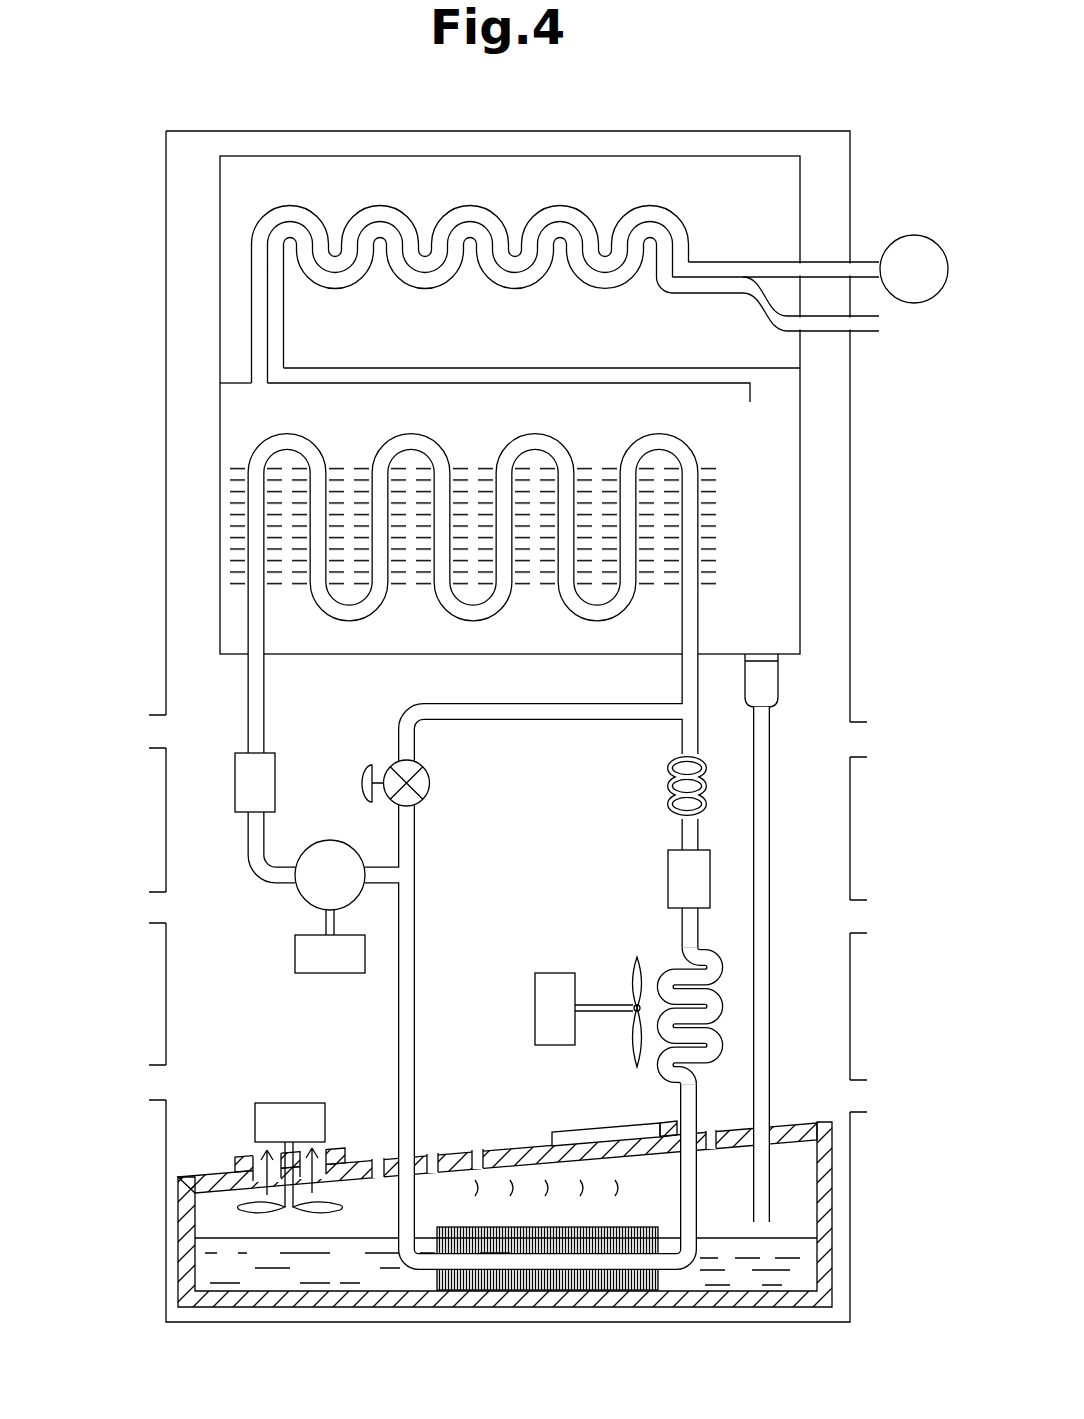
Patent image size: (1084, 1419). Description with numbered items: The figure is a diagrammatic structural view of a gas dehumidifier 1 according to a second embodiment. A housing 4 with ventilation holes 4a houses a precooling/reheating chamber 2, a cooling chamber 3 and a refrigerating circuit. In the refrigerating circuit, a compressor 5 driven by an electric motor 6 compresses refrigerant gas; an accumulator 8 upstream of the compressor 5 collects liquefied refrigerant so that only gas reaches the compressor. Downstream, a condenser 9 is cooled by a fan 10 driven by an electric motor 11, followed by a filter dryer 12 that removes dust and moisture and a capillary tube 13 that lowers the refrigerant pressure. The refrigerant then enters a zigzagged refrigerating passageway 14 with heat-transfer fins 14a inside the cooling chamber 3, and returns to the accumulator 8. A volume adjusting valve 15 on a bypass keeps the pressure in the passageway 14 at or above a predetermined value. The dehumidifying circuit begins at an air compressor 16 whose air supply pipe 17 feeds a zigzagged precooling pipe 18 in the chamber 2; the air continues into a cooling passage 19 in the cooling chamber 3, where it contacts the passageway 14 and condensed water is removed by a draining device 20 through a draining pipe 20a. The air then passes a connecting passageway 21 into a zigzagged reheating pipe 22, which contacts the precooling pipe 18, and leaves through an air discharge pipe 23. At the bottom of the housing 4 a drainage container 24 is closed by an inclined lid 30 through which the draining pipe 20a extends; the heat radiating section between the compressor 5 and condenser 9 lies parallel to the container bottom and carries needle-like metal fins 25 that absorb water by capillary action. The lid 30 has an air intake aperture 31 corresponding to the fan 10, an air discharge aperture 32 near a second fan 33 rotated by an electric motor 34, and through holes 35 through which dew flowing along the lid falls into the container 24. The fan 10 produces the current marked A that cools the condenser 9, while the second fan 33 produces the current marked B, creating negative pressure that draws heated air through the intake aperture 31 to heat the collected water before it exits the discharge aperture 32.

The gas dehumidifier 1 is at (731, 100).
The precooling/reheating chamber 2 is at (388, 157).
The cooling chamber 3 is at (800, 497).
The housing 4 is at (470, 131).
The ventilation holes 4a is at (150, 716).
The compressor 5 is at (331, 840).
The electric motor 6 is at (310, 974).
The accumulator 8 is at (277, 771).
The condenser 9 is at (660, 962).
The fan 10 is at (632, 958).
The electric motor 11 is at (535, 1008).
The filter dryer 12 is at (668, 875).
The capillary tube 13 is at (668, 779).
The refrigerating passageway 14 is at (571, 443).
The fins 14a is at (703, 468).
The volume adjusting valve 15 is at (431, 783).
The air compressor 16 is at (920, 236).
The air supply pipe 17 is at (868, 259).
The precooling pipe 18 is at (578, 207).
The cooling passage 19 is at (228, 413).
The draining device 20 is at (780, 685).
The draining pipe 20a is at (771, 848).
The connecting passageway 21 is at (540, 368).
The reheating pipe 22 is at (430, 289).
The air discharge pipe 23 is at (876, 333).
The drainage container 24 is at (834, 1256).
The fins 25 is at (640, 1232).
The lid 30 is at (795, 1121).
The air intake aperture 31 is at (568, 1135).
The air discharge aperture 32 is at (258, 1157).
The second fan 33 is at (326, 1212).
The electric motor 34 is at (300, 1103).
The through holes 35 is at (208, 1178).